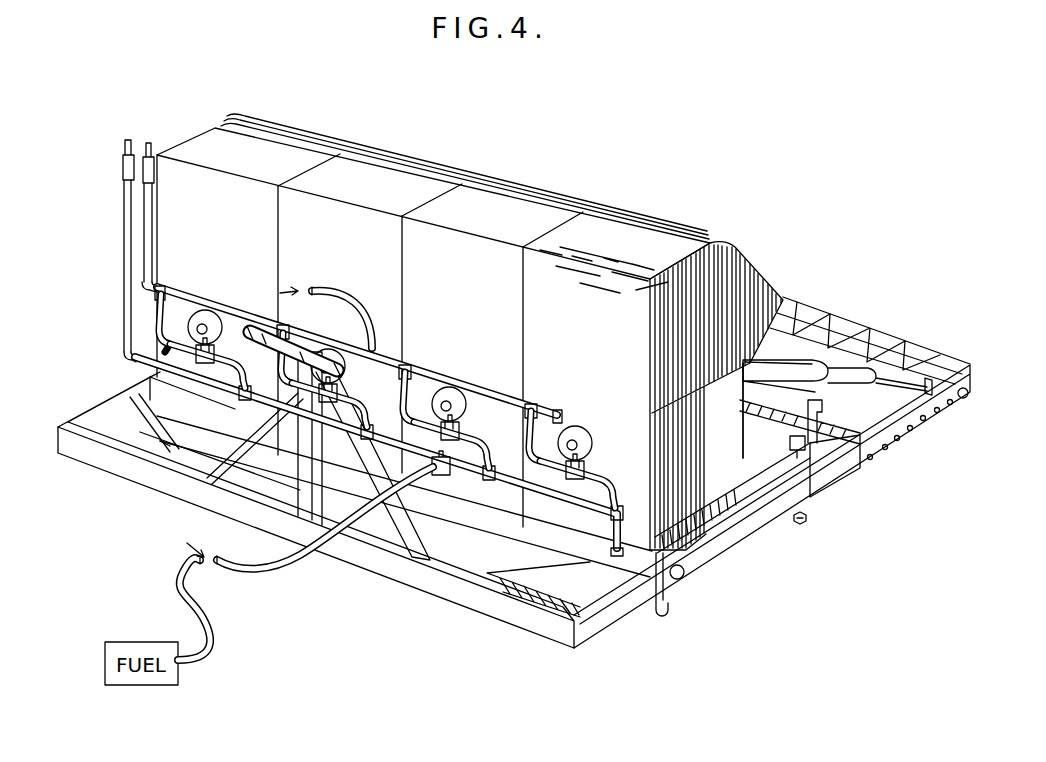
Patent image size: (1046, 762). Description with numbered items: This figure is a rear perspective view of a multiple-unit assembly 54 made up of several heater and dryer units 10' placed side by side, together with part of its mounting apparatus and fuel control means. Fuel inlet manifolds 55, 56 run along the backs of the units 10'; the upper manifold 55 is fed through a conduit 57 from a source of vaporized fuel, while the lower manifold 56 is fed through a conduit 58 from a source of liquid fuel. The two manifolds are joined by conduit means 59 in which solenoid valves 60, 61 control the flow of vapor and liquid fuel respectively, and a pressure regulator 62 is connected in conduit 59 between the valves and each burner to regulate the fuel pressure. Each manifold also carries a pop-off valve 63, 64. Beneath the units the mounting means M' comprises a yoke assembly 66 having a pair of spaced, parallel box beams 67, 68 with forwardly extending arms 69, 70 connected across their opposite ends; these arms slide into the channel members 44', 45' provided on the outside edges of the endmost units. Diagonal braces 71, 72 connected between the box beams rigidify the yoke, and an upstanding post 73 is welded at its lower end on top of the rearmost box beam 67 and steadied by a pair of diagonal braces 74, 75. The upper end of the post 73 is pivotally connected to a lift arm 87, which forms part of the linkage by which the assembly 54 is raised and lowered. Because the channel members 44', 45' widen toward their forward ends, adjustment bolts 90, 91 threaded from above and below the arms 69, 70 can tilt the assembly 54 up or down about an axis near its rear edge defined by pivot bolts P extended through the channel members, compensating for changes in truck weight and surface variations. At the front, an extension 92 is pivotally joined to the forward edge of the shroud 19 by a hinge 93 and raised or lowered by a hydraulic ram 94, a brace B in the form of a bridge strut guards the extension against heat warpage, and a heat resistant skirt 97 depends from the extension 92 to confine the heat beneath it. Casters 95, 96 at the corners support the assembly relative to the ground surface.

The heater and dryer unit 10' is at (433, 330).
The assembly 54 is at (644, 191).
The pop-off valve 64 is at (125, 150).
The pop-off valve 63 is at (153, 150).
The channel member 45' is at (112, 331).
The pressure regulator 62 is at (210, 322).
The solenoid valve 60 is at (437, 362).
The solenoid valve 61 is at (483, 421).
The upper fuel inlet manifold 55 is at (483, 392).
The lower fuel inlet manifold 56 is at (532, 509).
The conduit 57 is at (340, 292).
The lift arm 87 is at (294, 345).
The conduit 58 is at (294, 572).
The conduit means 59 is at (500, 472).
The yoke assembly 66 is at (484, 634).
The box beam 67 is at (176, 487).
The box beam 68 is at (200, 434).
The forwardly extending arm 69 is at (106, 401).
The forwardly extending arm 70 is at (607, 613).
The diagonal brace 71 is at (150, 430).
The diagonal brace 72 is at (562, 587).
The upstanding post 73 is at (303, 483).
The diagonal brace 74 is at (231, 463).
The diagonal brace 75 is at (388, 540).
The mounting means M' is at (623, 680).
The channel member 44' is at (736, 469).
The pivot bolt P is at (684, 574).
The caster 95 is at (667, 616).
The shroud 19 is at (830, 477).
The adjustment bolt 91 is at (807, 519).
The adjustment bolt 90 is at (808, 449).
The hinge 93 is at (837, 428).
The extension 92 is at (886, 370).
The hydraulic ram 94 is at (765, 367).
The brace B is at (831, 328).
The caster 96 is at (963, 399).
The heat resistant skirt 97 is at (906, 442).